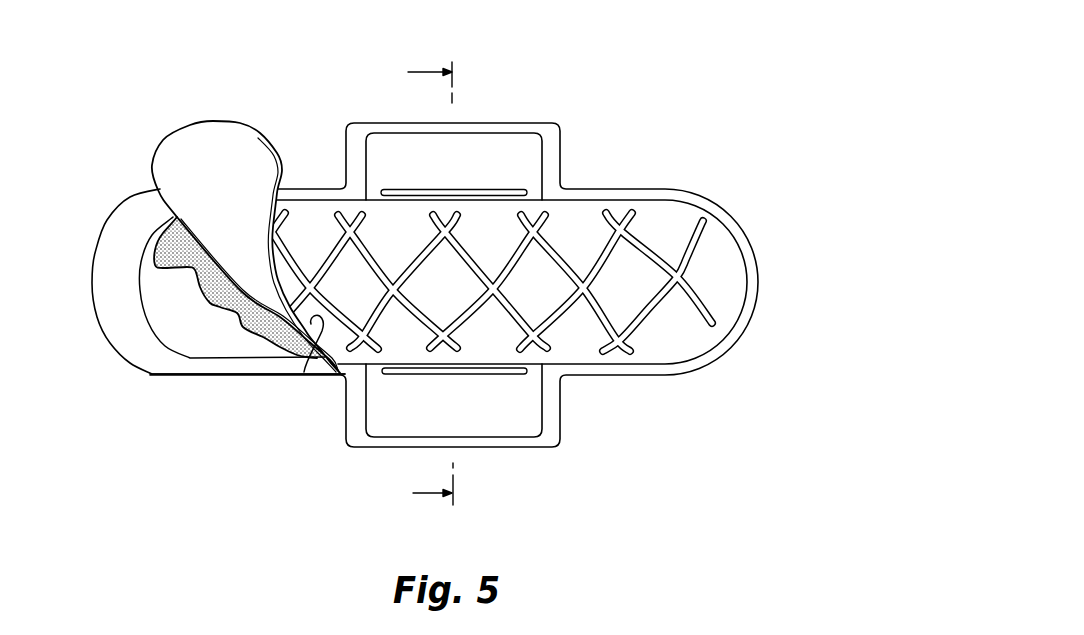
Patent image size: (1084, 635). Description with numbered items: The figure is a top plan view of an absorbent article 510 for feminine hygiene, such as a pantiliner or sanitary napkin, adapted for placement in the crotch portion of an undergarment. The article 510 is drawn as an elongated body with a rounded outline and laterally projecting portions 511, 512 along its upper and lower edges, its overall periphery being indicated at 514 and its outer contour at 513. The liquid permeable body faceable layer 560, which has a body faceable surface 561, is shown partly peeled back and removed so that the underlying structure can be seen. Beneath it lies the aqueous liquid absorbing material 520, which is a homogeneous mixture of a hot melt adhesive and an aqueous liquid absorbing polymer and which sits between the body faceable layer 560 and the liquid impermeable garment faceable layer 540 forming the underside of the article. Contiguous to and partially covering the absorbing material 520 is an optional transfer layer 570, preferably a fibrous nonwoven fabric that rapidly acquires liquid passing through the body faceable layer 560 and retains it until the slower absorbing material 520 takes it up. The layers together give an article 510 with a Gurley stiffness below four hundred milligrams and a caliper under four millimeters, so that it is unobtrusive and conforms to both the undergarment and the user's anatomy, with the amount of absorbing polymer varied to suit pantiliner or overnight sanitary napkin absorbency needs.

The absorbent article 510 is at (632, 80).
The upper wing/flap portion 511 is at (625, 189).
The lower wing/flap portion 512 is at (645, 377).
The topsheet 513 is at (93, 294).
The periphery of article 514 is at (761, 284).
The aqueous liquid absorbing material 520 is at (160, 333).
The garment faceable layer 540 is at (156, 377).
The body faceable layer 560 is at (214, 124).
The body faceable surface 561 is at (304, 372).
The transfer layer 570 is at (253, 338).